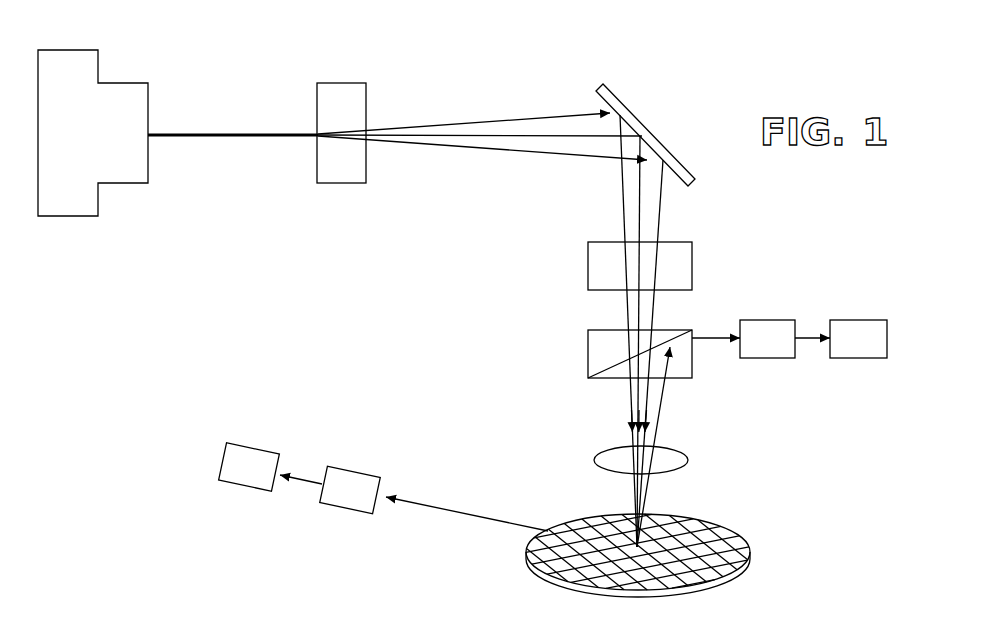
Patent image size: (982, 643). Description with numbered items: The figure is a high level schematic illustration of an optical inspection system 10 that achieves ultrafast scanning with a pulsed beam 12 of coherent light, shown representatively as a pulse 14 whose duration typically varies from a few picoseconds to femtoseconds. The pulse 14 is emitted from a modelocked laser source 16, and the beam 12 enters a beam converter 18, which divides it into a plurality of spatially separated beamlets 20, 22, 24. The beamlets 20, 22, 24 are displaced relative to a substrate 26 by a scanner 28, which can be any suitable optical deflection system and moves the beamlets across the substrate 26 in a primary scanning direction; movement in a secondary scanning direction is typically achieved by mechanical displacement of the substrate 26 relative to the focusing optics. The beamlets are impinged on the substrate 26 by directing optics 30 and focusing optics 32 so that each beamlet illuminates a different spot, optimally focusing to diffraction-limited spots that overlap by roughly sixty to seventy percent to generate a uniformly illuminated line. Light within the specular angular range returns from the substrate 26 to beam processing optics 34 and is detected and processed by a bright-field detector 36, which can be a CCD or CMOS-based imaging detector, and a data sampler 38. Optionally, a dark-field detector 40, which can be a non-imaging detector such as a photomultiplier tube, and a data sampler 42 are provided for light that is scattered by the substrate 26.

The optical inspection system 10 is at (600, 63).
The pulsed beam 12 is at (246, 138).
The pulse 14 is at (206, 126).
The modelocked laser source 16 is at (77, 50).
The beam converter 18 is at (318, 184).
The beamlet 20 is at (443, 126).
The beamlet 22 is at (540, 136).
The beamlet 24 is at (457, 148).
The substrate 26 is at (713, 537).
The scanner 28 is at (588, 261).
The directing optics 30 is at (666, 146).
The focusing optics 32 is at (594, 460).
The beam processing optics 34 is at (588, 351).
The bright-field detector 36 is at (768, 320).
The data sampler 38 is at (856, 320).
The dark-field detector 40 is at (345, 469).
The data sampler 42 is at (245, 448).